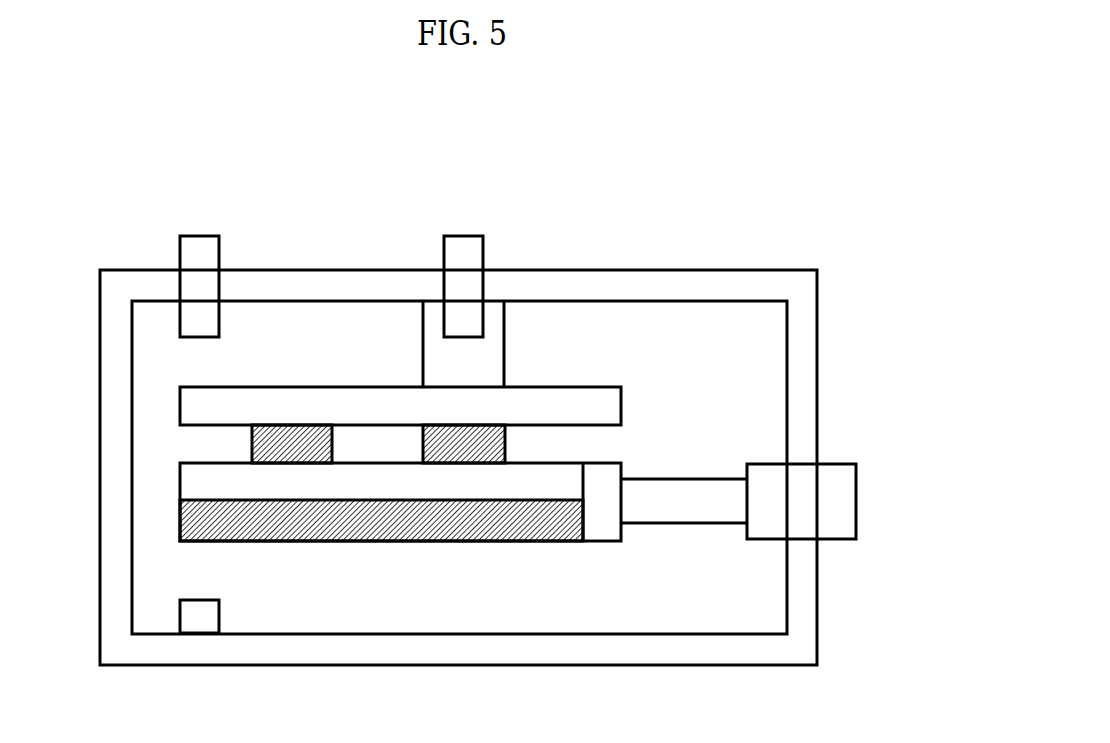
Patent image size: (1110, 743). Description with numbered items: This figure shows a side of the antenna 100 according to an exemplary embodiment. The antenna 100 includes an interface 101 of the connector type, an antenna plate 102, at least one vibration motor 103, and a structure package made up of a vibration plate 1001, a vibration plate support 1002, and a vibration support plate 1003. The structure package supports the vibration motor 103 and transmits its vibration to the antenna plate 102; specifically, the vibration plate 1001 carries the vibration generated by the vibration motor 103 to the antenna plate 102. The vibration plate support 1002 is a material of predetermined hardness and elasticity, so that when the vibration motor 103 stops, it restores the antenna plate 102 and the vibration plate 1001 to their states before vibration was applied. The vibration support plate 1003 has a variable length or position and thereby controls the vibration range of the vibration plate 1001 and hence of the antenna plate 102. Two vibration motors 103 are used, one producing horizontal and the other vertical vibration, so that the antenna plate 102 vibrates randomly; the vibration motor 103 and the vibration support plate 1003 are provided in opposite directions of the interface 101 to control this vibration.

The antenna 100 is at (702, 172).
The interface 101 is at (857, 497).
The antenna plate 102 is at (180, 520).
The vibration motor 103 is at (290, 456).
The vibration plate 1001 is at (180, 405).
The vibration plate support 1002 is at (423, 330).
The vibration support plate 1003 is at (196, 236).